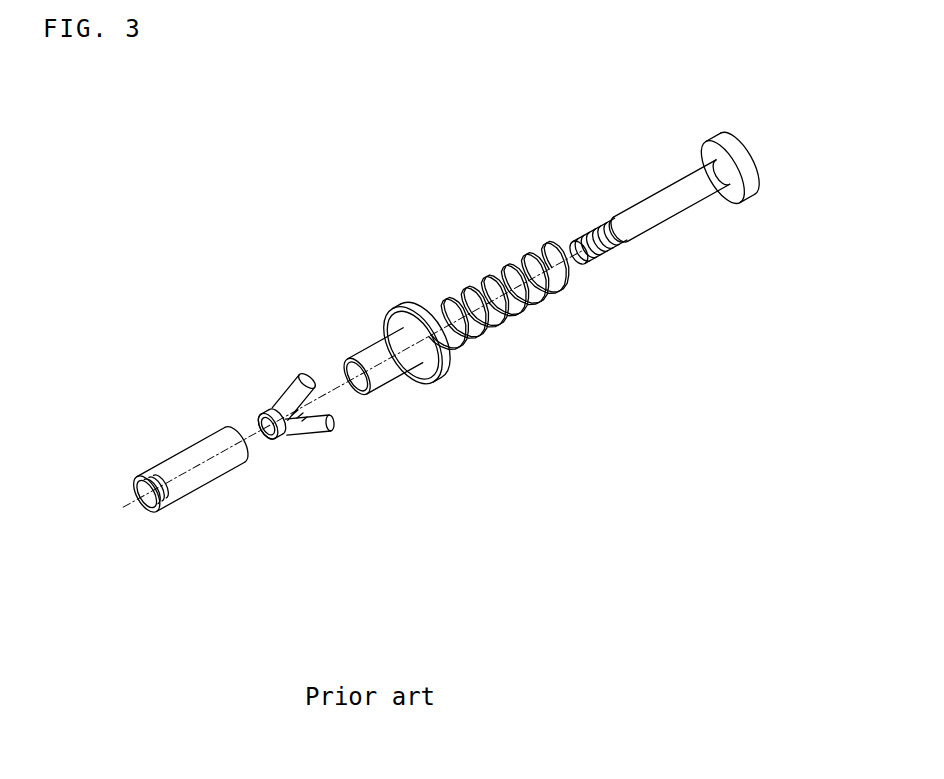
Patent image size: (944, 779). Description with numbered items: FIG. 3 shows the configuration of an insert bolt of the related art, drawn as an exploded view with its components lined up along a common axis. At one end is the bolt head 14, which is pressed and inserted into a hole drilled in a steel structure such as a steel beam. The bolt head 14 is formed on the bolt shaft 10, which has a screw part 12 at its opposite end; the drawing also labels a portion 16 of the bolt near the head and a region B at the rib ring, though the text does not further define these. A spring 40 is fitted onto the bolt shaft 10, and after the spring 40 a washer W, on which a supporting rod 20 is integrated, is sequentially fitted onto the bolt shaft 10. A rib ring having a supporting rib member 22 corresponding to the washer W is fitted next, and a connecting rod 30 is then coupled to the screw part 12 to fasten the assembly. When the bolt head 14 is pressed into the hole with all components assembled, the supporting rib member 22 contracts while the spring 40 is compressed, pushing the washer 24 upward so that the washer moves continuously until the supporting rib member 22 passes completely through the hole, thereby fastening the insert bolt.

The bolt shaft 10 is at (650, 205).
The screw part 12 is at (585, 228).
The bolt head 14 is at (757, 178).
The neck portion 16 is at (700, 160).
The supporting rod 20 is at (370, 358).
The supporting rib member 22 is at (298, 366).
The washer 24 is at (421, 307).
The connecting rod 30 is at (183, 458).
The spring 40 is at (477, 262).
The washer W is at (390, 310).
The bore B is at (277, 453).